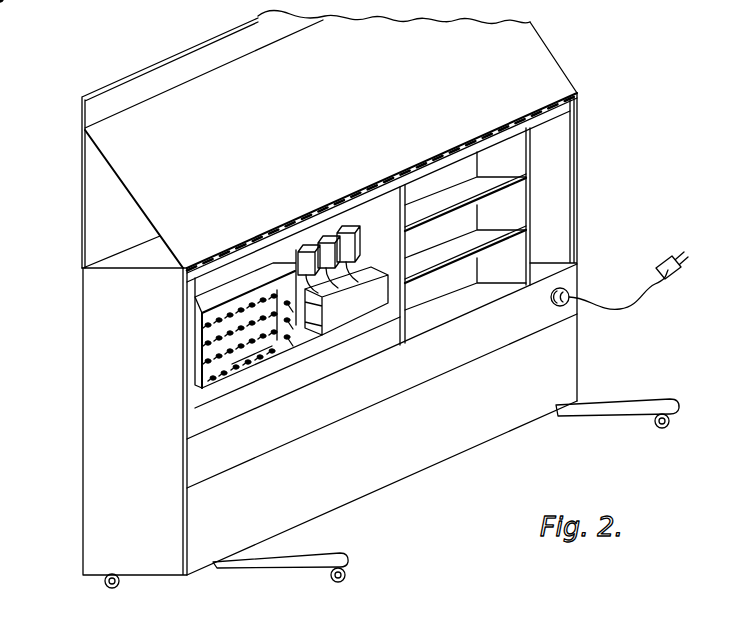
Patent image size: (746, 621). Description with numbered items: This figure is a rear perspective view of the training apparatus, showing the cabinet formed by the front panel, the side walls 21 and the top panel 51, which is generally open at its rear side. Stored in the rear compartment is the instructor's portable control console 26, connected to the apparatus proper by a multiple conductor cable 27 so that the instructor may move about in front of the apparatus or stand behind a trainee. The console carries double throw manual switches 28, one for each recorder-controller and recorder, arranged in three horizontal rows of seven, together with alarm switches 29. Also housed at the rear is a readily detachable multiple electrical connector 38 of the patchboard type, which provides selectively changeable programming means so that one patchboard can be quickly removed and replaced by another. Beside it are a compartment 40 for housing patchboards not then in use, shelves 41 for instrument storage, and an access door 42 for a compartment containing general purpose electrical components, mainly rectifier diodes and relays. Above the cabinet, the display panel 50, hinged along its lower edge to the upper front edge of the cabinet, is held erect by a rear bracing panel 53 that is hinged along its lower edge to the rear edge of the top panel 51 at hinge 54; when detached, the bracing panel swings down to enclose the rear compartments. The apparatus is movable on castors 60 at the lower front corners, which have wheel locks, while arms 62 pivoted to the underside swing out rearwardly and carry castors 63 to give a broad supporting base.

The side walls 21 is at (143, 418).
The portable control console 26 is at (276, 283).
The multiple conductor cable 27 is at (292, 308).
The double throw manual switches 28 is at (297, 310).
The alarm switches 29 is at (249, 363).
The multiple electrical connector 38 is at (345, 315).
The compartment 40 is at (555, 173).
The shelves 41 is at (456, 248).
The access door 42 is at (437, 452).
The display panel 50 is at (80, 188).
The top panel 51 is at (140, 262).
The rear bracing panel 53 is at (323, 128).
The hinge 54 is at (330, 203).
The castors 60 is at (101, 583).
The arms 62 is at (285, 560).
The castors 63 is at (348, 578).